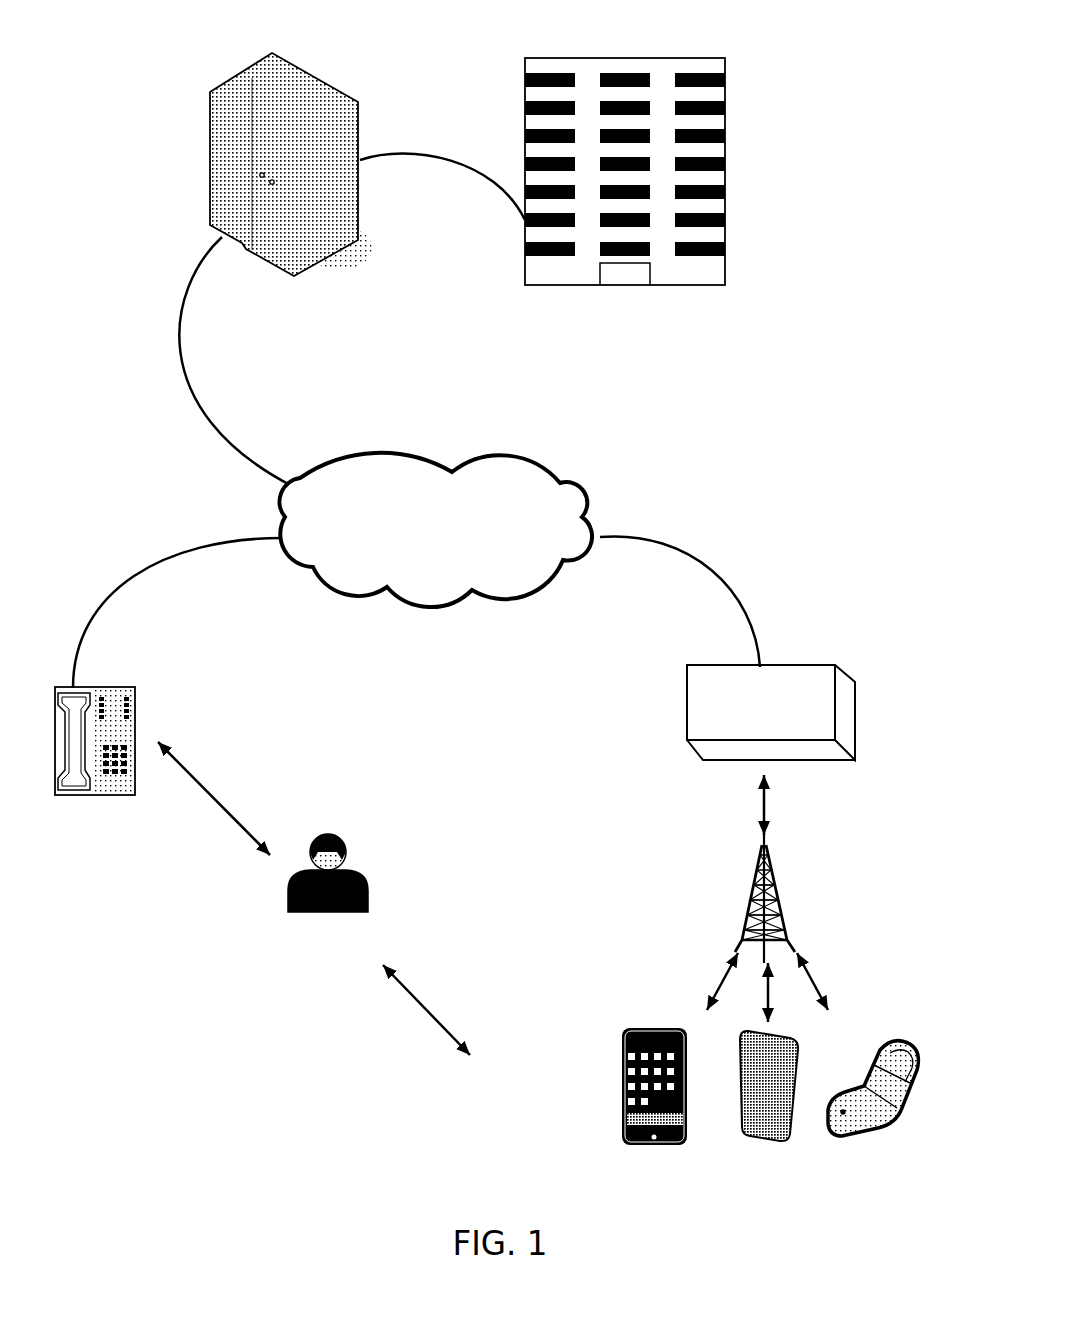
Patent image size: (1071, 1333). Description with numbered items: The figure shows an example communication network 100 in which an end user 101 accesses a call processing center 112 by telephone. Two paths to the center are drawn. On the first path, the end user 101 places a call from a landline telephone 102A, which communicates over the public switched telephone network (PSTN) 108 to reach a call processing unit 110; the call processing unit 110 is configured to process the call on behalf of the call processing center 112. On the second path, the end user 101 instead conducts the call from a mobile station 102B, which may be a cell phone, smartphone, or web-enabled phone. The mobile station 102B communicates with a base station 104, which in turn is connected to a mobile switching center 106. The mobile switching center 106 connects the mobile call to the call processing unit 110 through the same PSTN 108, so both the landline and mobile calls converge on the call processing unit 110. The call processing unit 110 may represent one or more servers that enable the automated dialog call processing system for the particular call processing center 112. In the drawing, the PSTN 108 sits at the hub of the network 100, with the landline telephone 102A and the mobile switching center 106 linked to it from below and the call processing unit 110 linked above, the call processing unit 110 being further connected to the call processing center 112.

The communication network 100 is at (872, 29).
The end user 101 is at (327, 908).
The landline telephone 102A is at (133, 688).
The mobile station 102B is at (622, 1048).
The base station 104 is at (772, 858).
The mobile switching center 106 is at (771, 712).
The public switched telephone network (PSTN) 108 is at (436, 530).
The call processing unit 110 is at (287, 234).
The call processing center 112 is at (625, 248).